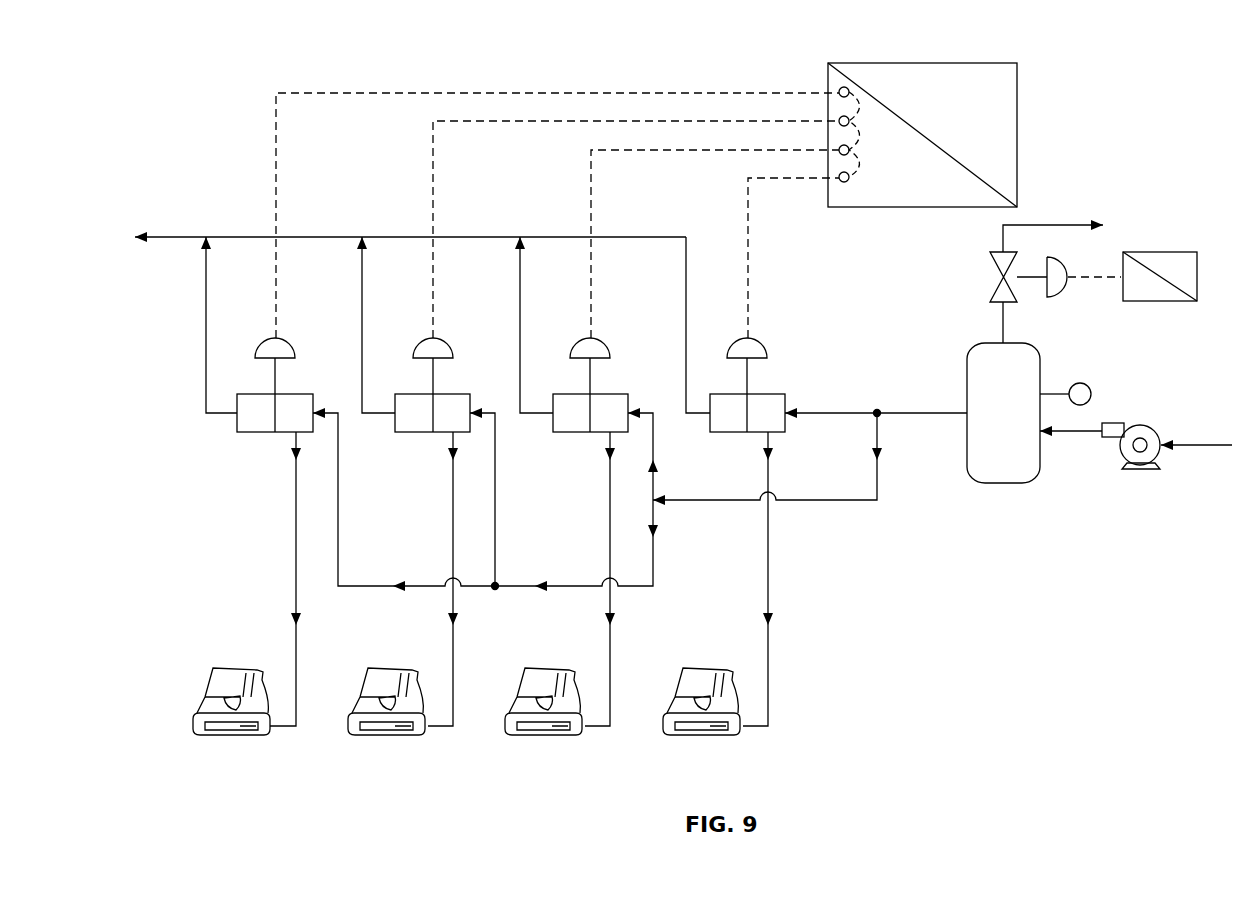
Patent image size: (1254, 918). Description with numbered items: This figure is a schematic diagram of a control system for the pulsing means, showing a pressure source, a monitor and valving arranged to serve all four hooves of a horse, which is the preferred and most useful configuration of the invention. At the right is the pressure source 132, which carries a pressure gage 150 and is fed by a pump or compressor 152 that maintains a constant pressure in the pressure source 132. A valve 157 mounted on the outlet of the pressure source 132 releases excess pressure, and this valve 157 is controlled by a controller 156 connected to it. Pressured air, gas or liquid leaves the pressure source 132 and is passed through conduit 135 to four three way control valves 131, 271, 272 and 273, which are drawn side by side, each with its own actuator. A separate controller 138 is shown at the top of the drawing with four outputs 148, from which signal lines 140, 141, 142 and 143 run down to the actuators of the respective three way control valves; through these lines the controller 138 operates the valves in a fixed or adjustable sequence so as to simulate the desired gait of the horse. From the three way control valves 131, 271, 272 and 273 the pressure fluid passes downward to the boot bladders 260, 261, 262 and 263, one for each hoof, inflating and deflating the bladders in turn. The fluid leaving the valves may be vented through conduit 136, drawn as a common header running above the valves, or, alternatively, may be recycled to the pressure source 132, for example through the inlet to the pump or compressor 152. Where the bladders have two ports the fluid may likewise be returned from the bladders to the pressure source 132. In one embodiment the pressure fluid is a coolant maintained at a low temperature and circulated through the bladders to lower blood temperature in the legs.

The controller 138 is at (1000, 63).
The controller outputs 148 is at (855, 83).
The control signal line 140 is at (275, 133).
The control signal line 141 is at (433, 157).
The control signal line 142 is at (592, 180).
The control signal line 143 is at (749, 220).
The conduit 136 is at (180, 236).
The three way control valve 273 is at (298, 392).
The three way control valve 272 is at (455, 392).
The three way control valve 271 is at (612, 392).
The three way control valve 131 is at (770, 392).
The conduit 135 is at (905, 412).
The pressure source 132 is at (1043, 368).
The valve 157 is at (1003, 264).
The controller 156 is at (1175, 251).
The pressure gage 150 is at (1083, 385).
The pump or compressor 152 is at (1142, 425).
The boot bladder 263 is at (213, 740).
The boot bladder 262 is at (371, 740).
The boot bladder 261 is at (562, 738).
The boot bladder 260 is at (720, 738).